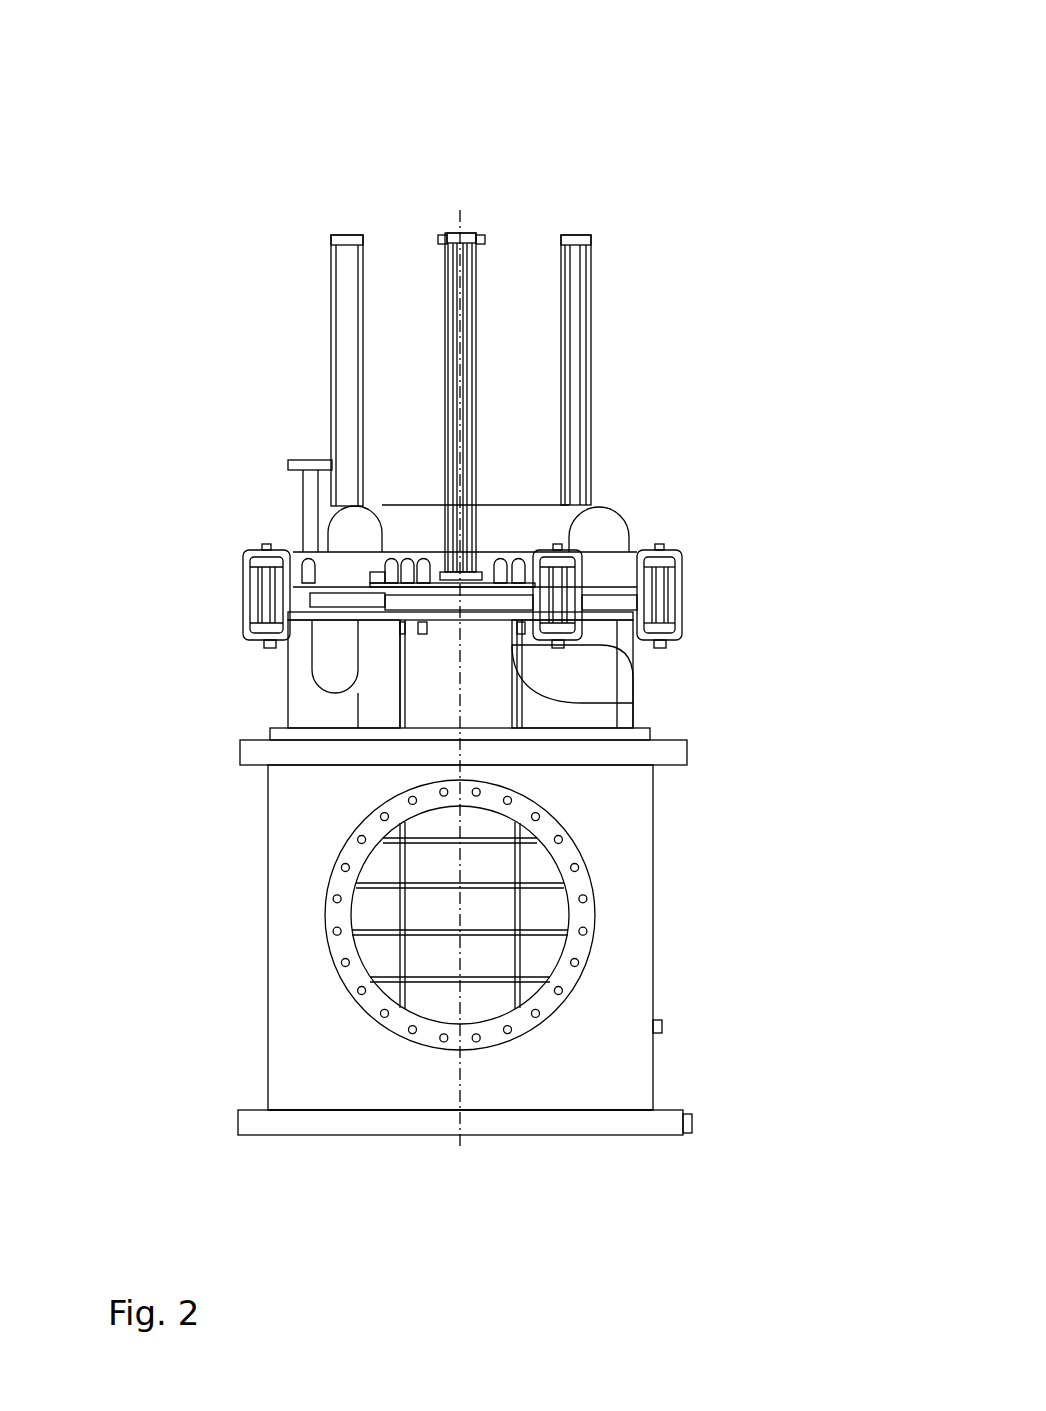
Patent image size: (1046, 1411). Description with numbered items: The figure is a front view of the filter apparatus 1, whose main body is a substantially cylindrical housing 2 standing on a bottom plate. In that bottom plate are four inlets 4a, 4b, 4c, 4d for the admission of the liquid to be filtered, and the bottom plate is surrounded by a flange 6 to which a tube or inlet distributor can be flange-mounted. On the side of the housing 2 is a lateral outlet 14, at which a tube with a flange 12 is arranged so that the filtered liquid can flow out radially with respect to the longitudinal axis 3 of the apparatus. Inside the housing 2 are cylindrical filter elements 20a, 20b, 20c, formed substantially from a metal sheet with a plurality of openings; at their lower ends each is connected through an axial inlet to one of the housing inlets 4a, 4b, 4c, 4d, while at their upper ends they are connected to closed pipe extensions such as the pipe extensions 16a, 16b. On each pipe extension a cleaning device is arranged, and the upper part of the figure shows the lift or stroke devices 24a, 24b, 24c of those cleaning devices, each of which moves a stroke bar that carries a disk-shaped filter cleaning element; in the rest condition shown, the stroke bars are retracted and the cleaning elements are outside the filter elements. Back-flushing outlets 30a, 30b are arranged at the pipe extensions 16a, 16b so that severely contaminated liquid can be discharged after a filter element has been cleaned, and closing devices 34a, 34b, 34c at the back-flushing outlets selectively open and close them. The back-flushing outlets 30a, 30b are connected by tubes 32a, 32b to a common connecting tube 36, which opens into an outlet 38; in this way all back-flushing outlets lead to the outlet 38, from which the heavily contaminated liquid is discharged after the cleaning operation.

The filter apparatus 1 is at (146, 106).
The housing 2 is at (620, 1066).
The longitudinal axis 3 is at (345, 1140).
The inlet 4a is at (350, 1150).
The inlet 4b is at (437, 1152).
The inlet 4c is at (464, 1155).
The inlet 4d is at (572, 1155).
The flange 6 is at (672, 1134).
The flange 12 is at (592, 887).
The lateral outlet 14 is at (553, 861).
The pipe extension 16a is at (415, 708).
The pipe extension 16b is at (300, 699).
The filter element 20a is at (428, 956).
The filter element 20b is at (368, 910).
The filter element 20c is at (545, 955).
The stroke device 24a is at (453, 216).
The stroke device 24b is at (326, 218).
The stroke device 24c is at (589, 212).
The back-flushing outlet 30a is at (520, 695).
The back-flushing outlet 30b is at (352, 700).
The tube 32a is at (600, 660).
The tube 32b is at (323, 636).
The closing device 34a is at (578, 560).
The closing device 34b is at (236, 612).
The closing device 34c is at (694, 604).
The connecting tube 36 is at (417, 494).
The outlet 38 is at (311, 444).